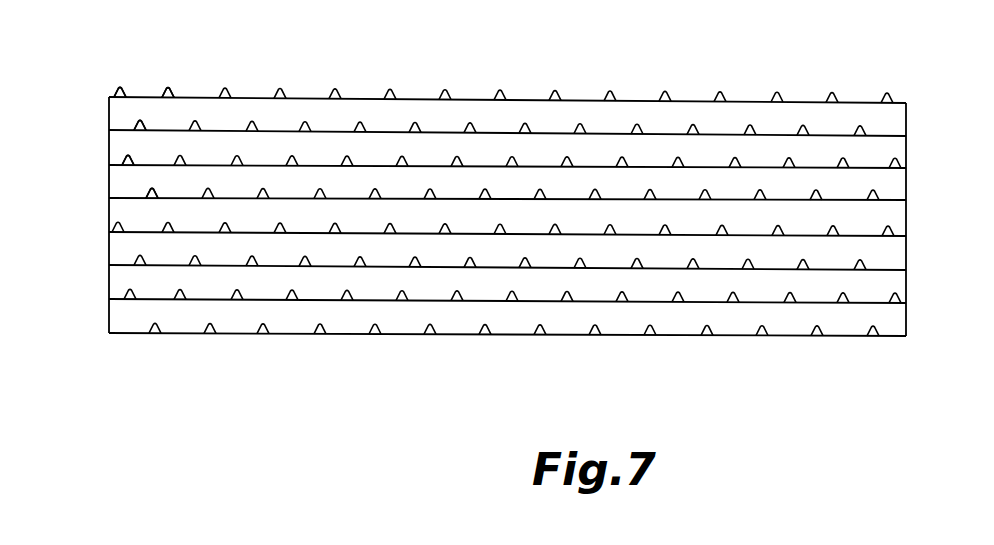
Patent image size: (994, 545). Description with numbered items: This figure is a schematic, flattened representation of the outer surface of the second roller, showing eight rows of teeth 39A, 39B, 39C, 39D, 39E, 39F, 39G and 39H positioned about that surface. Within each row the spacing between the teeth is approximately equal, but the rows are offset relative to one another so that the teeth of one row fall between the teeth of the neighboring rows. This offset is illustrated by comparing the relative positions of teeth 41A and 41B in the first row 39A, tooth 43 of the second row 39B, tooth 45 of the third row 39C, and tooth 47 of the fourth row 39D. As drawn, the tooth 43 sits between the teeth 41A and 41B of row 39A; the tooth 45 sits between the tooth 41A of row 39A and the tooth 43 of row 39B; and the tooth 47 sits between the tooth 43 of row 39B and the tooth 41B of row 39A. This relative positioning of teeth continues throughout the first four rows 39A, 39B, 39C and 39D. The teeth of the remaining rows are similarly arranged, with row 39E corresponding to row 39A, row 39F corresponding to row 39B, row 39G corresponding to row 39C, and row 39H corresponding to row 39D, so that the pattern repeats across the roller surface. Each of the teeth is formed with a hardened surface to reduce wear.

The row of teeth 39A is at (109, 98).
The row of teeth 39B is at (109, 131).
The row of teeth 39C is at (109, 165).
The row of teeth 39D is at (109, 198).
The row of teeth 39E is at (109, 231).
The row of teeth 39F is at (109, 264).
The row of teeth 39G is at (109, 298).
The row of teeth 39H is at (109, 332).
The tooth 41A is at (122, 90).
The tooth 41B is at (171, 90).
The tooth 43 is at (144, 124).
The tooth 45 is at (134, 159).
The tooth 47 is at (156, 190).